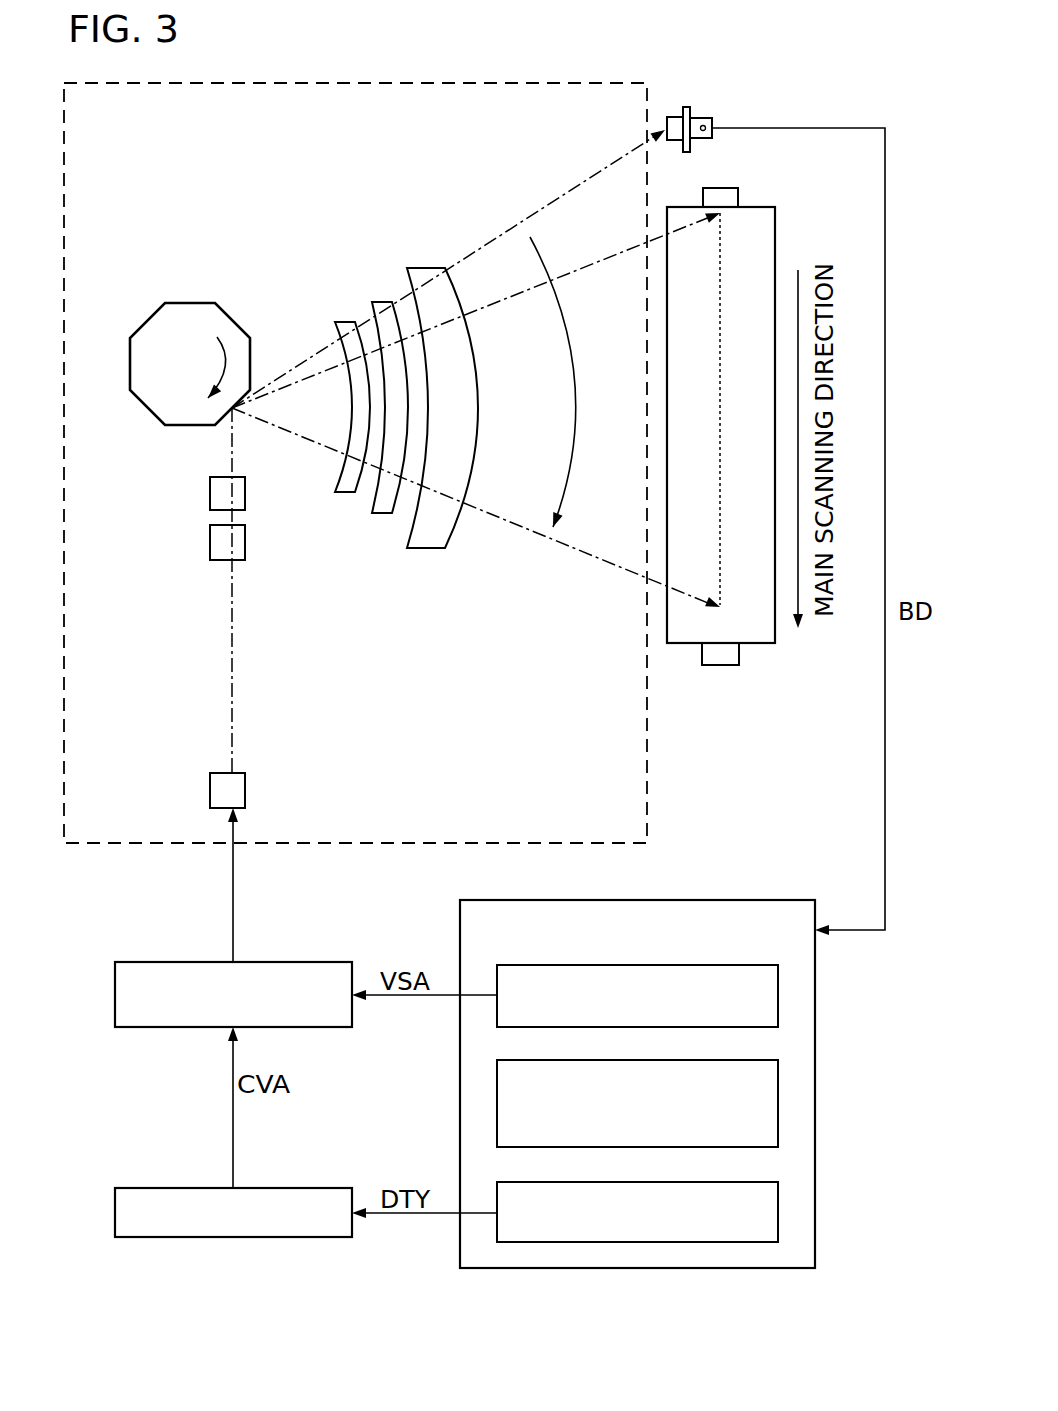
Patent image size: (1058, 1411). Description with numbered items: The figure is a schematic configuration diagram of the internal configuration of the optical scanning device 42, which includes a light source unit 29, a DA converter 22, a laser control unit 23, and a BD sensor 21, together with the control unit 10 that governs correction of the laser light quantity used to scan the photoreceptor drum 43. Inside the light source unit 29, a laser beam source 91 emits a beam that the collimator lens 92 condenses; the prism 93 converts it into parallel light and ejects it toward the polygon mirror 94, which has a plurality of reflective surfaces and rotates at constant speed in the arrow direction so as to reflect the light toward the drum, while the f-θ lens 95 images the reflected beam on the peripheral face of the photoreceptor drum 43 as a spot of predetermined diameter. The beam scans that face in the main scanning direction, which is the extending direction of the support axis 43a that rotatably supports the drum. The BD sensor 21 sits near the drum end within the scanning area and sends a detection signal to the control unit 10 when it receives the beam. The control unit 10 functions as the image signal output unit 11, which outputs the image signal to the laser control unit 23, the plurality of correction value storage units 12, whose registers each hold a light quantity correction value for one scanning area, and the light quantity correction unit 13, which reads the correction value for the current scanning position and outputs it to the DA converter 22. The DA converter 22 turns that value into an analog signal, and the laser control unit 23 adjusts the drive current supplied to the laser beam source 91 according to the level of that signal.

The control unit 10 is at (780, 900).
The image signal output unit 11 is at (778, 988).
The plurality of correction value storage units 12 is at (778, 1080).
The light quantity correction unit 13 is at (778, 1207).
The BD sensor 21 is at (700, 117).
The DA converter 22 is at (273, 1188).
The laser control unit 23 is at (273, 962).
The light source unit 29 is at (503, 83).
The optical scanning device 42 is at (214, 1117).
The photoreceptor drum 43 is at (683, 645).
The support axis 43a is at (720, 665).
The laser beam source 91 is at (210, 785).
The collimator lens 92 is at (210, 537).
The prism 93 is at (210, 483).
The polygon mirror 94 is at (193, 303).
The f-θ lens 95 is at (378, 253).